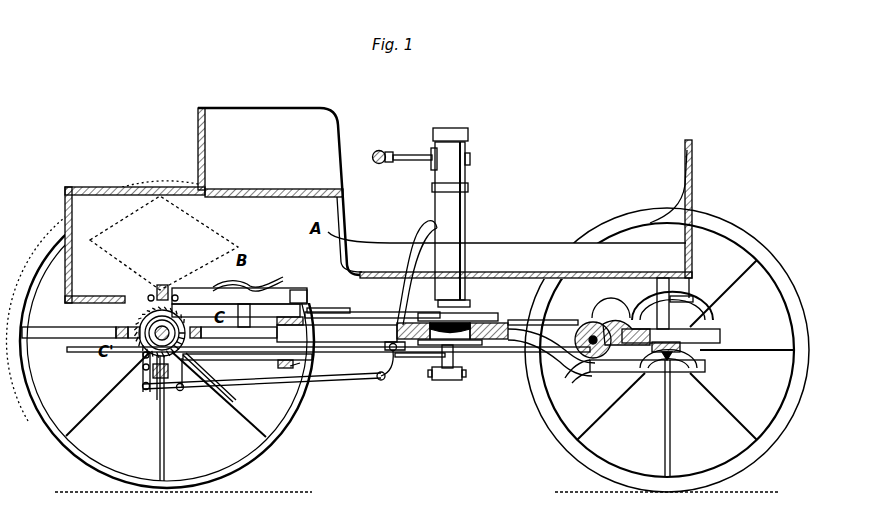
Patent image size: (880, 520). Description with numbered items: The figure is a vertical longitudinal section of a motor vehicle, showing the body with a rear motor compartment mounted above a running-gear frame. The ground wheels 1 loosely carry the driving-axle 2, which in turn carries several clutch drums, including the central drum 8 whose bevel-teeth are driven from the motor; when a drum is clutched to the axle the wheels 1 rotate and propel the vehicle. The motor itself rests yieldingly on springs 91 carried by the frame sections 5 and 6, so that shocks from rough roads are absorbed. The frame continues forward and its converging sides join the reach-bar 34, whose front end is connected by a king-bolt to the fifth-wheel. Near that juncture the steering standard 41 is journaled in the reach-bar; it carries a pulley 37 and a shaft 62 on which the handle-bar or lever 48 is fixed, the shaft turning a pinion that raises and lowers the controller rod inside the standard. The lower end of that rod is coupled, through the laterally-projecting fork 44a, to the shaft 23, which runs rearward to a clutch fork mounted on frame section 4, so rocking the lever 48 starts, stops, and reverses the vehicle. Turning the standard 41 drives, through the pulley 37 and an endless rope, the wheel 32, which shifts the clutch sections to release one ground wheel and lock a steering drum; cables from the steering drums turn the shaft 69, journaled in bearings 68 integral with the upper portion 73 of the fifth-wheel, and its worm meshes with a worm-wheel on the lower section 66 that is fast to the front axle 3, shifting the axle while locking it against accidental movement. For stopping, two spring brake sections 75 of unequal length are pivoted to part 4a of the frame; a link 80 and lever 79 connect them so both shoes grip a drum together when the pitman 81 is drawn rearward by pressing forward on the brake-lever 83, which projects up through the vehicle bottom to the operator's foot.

The wheels 1 is at (280, 433).
The driving-axle 2 is at (170, 331).
The front axle 3 is at (680, 374).
The section of frame 4 is at (183, 390).
The part of frame 4a is at (155, 290).
The frame section 5 is at (209, 323).
The frame section 6 is at (300, 291).
The drum 8 is at (140, 326).
The shaft 23 is at (418, 357).
The wheel 32 is at (390, 316).
The reach-bar 34 is at (360, 343).
The pulley 37 is at (498, 315).
The standard 41 is at (462, 232).
The laterally-projecting fork 44a is at (465, 376).
The handle-bar or lever 48 is at (381, 165).
The shaft 62 is at (419, 161).
The lower section of fifth-wheel 66 is at (690, 346).
The bearings 68 is at (593, 320).
The shaft 69 is at (590, 362).
The upper portion of fifth-wheel 73 is at (712, 330).
The brake sections 75 is at (186, 377).
The lever 79 is at (158, 400).
The link 80 is at (183, 391).
The pitman 81 is at (300, 368).
The brake-lever 83 is at (392, 366).
The springs 91 is at (263, 283).